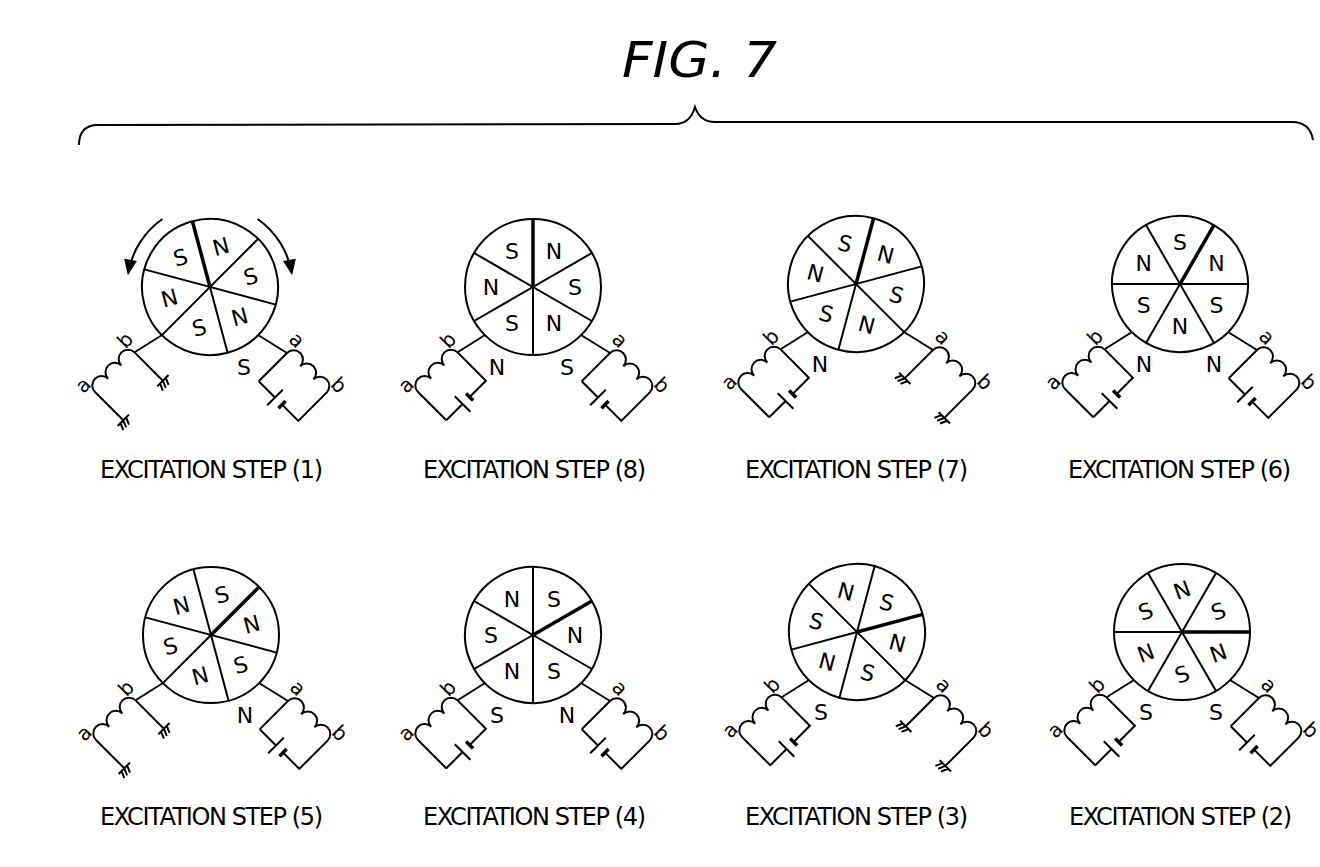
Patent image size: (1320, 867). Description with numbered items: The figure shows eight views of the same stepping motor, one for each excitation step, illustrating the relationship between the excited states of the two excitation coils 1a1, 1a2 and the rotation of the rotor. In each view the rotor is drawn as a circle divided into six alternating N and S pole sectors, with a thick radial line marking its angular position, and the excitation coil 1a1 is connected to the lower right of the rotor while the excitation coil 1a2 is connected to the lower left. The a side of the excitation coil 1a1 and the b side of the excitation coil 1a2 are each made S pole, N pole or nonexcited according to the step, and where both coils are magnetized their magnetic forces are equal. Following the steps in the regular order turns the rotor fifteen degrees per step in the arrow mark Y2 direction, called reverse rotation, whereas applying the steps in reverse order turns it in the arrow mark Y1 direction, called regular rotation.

The excitation coil 1a1 is at (784, 557).
The excitation coil 1a2 is at (606, 559).
The arrow mark Y1 direction Y1 is at (273, 233).
The arrow mark Y2 direction Y2 is at (144, 233).